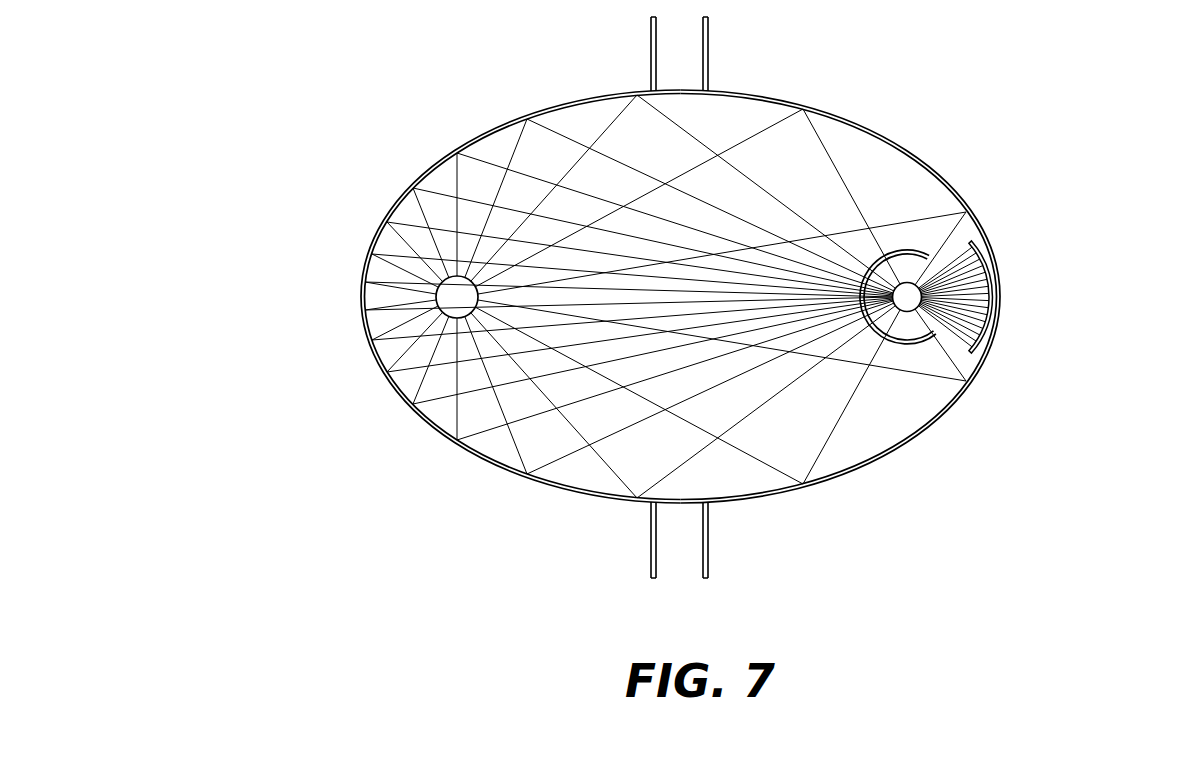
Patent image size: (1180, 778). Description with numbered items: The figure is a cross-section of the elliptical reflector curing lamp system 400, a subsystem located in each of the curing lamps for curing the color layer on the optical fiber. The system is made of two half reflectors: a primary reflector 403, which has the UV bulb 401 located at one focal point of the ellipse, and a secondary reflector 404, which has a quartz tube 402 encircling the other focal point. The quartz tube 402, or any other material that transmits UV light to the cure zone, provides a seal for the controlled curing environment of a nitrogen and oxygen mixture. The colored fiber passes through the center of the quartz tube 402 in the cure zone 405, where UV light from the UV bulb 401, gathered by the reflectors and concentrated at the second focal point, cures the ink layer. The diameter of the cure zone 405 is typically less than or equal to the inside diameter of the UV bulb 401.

The elliptical reflector curing lamp system 400 is at (465, 60).
The UV bulb 401 is at (436, 296).
The quartz tube 402 is at (921, 253).
The primary reflector 403 is at (423, 182).
The secondary reflector 404 is at (890, 141).
The cure zone 405 is at (907, 312).